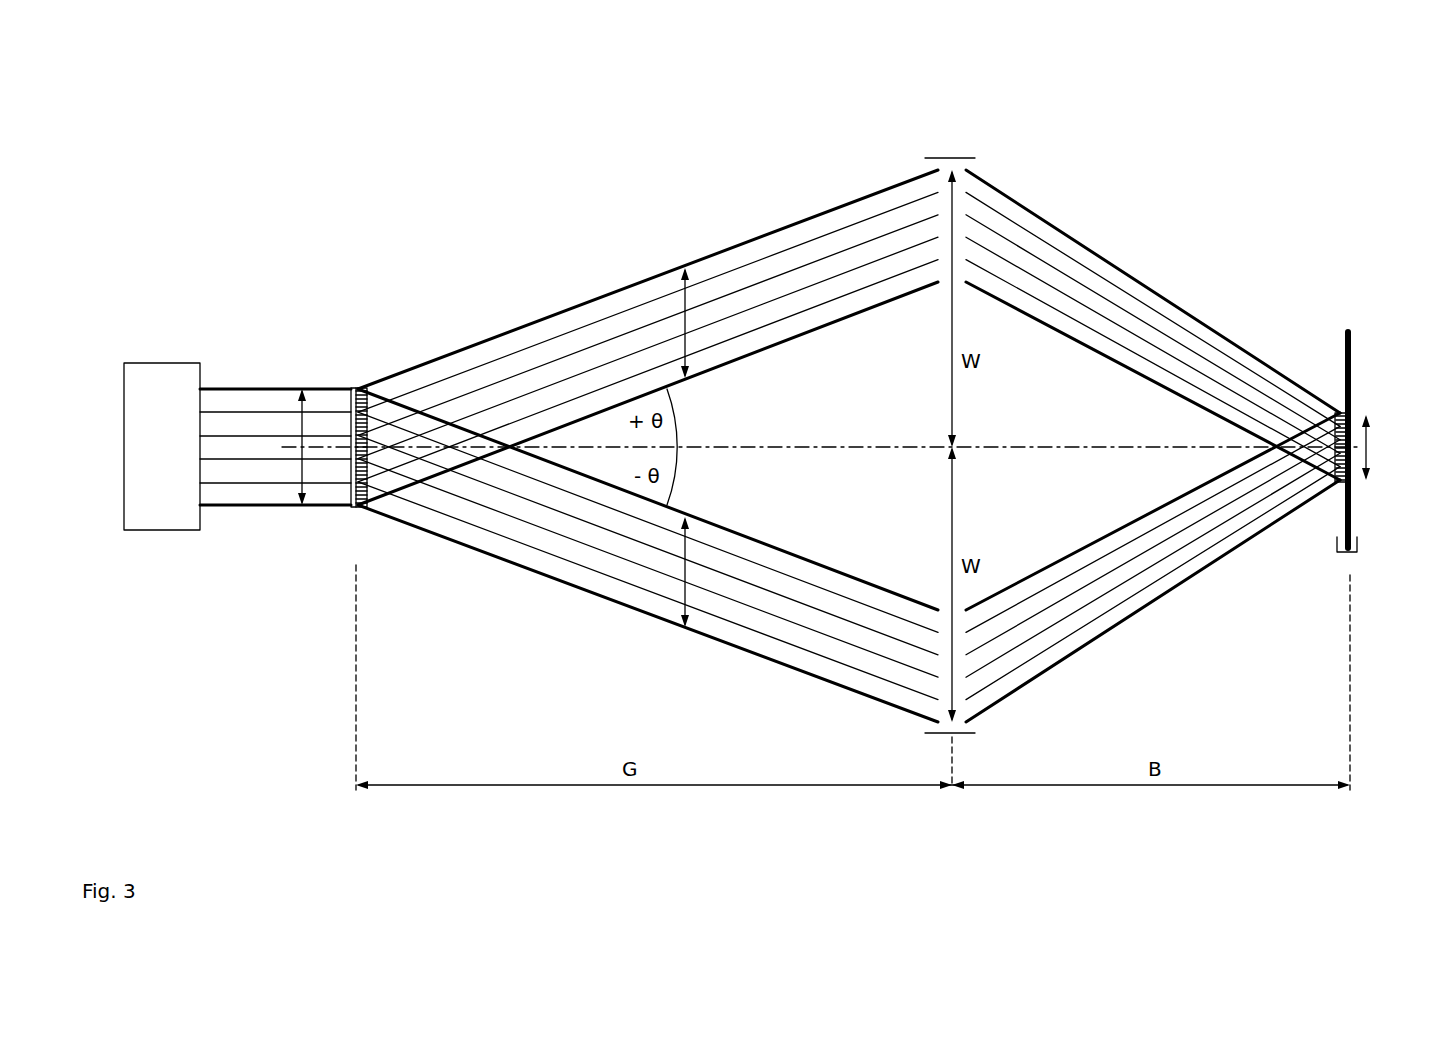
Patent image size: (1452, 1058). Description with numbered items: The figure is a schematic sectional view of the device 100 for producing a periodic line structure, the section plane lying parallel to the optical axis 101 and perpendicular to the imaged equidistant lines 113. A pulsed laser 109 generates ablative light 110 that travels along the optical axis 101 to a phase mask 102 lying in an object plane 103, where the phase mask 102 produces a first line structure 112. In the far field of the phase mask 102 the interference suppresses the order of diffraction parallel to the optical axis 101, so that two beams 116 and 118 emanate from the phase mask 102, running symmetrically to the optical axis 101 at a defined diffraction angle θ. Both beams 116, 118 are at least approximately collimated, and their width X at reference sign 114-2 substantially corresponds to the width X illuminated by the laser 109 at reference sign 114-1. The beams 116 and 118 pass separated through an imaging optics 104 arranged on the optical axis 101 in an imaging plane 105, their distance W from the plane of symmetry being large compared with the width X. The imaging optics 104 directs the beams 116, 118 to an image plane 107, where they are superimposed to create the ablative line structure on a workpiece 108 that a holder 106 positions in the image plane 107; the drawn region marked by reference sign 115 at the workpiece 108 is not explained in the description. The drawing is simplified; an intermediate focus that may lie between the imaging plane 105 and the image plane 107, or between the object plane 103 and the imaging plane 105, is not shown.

The device 100 is at (190, 92).
The optical axis 101 is at (1009, 447).
The phase mask 102 is at (353, 445).
The object plane 103 is at (356, 739).
The imaging optics 104 is at (961, 136).
The imaging plane 105 is at (953, 766).
The holder 106 is at (1358, 545).
The image plane 107 is at (1350, 740).
The workpiece 108 is at (1352, 362).
The pulsed laser 109 is at (150, 382).
The ablative light 110 is at (220, 390).
The first line structure 112 is at (373, 443).
The imaged equidistant lines 113 is at (1333, 440).
The width X illuminated by the laser 114-1 is at (305, 467).
The width X of the beams 114-2 is at (690, 323).
The second grating structure 115 is at (1368, 440).
The beam 116 is at (713, 265).
The beam 118 is at (722, 630).